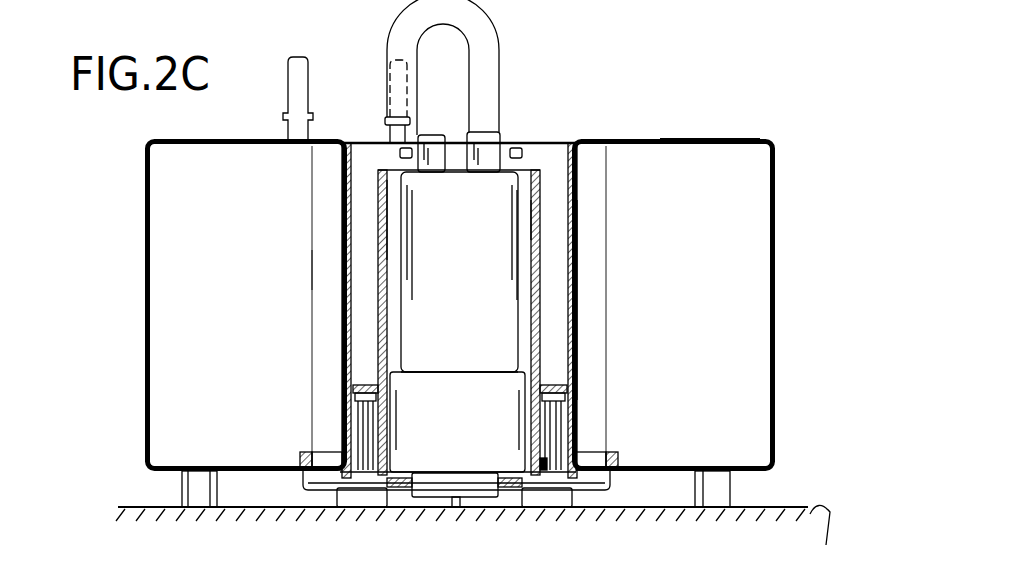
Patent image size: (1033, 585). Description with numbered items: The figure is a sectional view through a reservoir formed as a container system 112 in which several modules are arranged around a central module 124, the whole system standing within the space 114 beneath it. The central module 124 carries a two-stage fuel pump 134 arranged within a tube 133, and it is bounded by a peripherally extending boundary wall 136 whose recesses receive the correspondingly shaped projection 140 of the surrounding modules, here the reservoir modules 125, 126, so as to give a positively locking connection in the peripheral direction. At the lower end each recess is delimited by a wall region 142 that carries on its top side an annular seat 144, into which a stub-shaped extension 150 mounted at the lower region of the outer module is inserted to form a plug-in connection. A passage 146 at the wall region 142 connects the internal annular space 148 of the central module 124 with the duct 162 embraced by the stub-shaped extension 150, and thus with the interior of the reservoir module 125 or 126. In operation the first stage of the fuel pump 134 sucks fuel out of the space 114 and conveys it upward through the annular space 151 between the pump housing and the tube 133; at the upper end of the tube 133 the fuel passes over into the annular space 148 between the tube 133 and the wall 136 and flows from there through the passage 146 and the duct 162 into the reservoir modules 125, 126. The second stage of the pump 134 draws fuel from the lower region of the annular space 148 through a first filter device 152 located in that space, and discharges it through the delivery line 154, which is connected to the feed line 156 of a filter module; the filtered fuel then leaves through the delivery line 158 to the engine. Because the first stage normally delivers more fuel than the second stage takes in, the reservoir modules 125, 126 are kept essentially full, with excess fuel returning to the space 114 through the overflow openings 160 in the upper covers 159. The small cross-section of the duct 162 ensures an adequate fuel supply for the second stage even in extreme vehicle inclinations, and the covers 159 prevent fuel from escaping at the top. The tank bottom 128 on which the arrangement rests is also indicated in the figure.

The reservoir 112 is at (534, 68).
The space 114 is at (780, 505).
The central module 124 is at (360, 142).
The reservoir module 125 is at (743, 372).
The reservoir module 126 is at (178, 296).
The tank bottom 128 is at (831, 543).
The tube 133 is at (540, 217).
The two-stage fuel pump 134 is at (447, 318).
The boundary wall 136 is at (573, 295).
The projection 140 is at (323, 272).
The wall region 142 is at (587, 488).
The annular seat 144 is at (607, 477).
The passage 146 is at (577, 480).
The annular space 148 is at (555, 350).
The stub-shaped extension 150 is at (317, 475).
The annular space 151 is at (393, 247).
The first filter device 152 is at (553, 415).
The delivery line 154 is at (480, 32).
The feed line 156 is at (388, 85).
The delivery line 158 is at (295, 85).
The upper cover 159 is at (740, 147).
The overflow opening 160 is at (677, 148).
The duct 162 is at (330, 457).